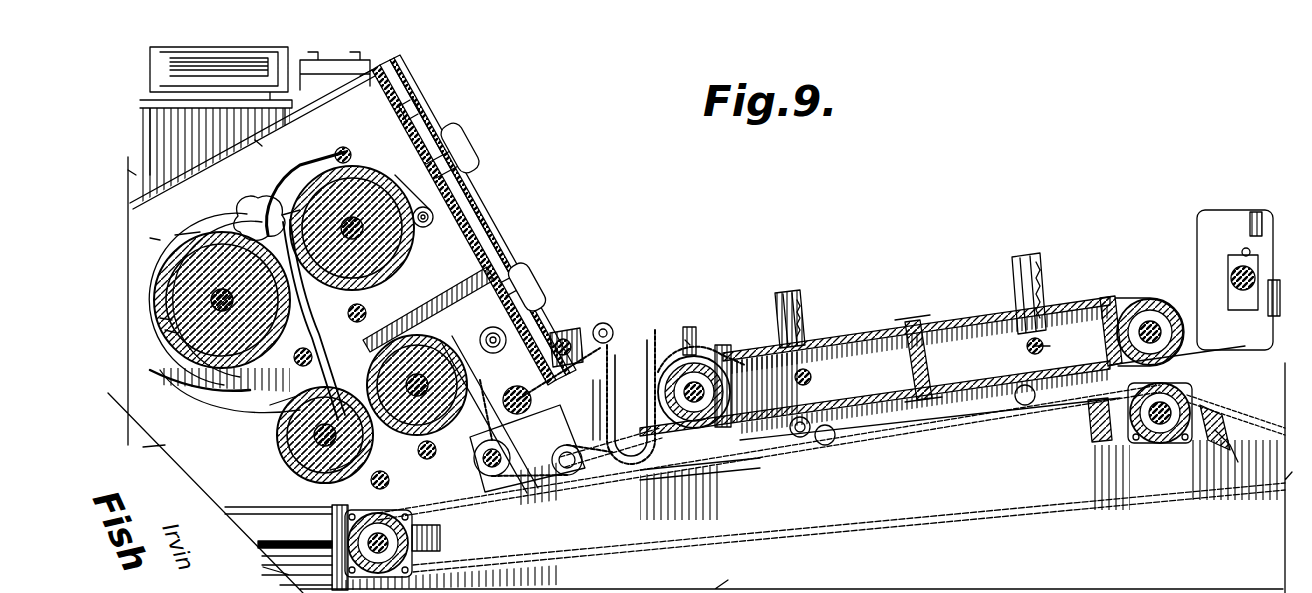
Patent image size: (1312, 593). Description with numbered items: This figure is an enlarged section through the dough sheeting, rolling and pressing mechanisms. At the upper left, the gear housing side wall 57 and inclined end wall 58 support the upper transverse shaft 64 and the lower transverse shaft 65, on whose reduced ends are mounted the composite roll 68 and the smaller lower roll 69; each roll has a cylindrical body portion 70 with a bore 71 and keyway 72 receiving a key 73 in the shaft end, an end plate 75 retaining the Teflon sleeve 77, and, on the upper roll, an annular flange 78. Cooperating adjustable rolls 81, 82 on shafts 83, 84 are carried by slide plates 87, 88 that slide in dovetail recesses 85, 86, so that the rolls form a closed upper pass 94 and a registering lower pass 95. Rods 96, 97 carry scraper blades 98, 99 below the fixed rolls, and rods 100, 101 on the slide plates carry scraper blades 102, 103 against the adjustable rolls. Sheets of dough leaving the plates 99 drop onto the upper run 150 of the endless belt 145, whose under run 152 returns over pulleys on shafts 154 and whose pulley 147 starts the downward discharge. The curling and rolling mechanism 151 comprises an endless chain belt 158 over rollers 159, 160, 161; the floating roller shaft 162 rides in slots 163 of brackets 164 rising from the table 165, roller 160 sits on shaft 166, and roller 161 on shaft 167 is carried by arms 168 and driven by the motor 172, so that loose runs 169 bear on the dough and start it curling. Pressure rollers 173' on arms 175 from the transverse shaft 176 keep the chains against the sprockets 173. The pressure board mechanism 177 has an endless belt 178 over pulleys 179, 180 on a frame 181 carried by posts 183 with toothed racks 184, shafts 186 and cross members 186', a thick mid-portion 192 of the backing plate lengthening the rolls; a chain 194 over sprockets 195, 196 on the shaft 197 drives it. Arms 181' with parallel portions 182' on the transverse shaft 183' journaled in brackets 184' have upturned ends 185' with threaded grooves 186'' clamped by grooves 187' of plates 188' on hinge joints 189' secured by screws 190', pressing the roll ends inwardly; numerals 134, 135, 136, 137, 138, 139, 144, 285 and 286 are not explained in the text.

The side wall 57 is at (358, 72).
The inclined end wall 58 is at (380, 100).
The upper transverse shaft 64 is at (215, 303).
The lower transverse shaft 65 is at (278, 437).
The composite roll 68 is at (151, 238).
The lower roll 69 is at (275, 455).
The cylindrical body portion 70 is at (160, 278).
The bore 71 is at (205, 225).
The keyway 72 is at (160, 320).
The key 73 is at (165, 332).
The end plate 75 is at (178, 232).
The sleeve 77 is at (148, 255).
The annular flange 78 is at (129, 172).
The adjustable roll 81 is at (292, 170).
The adjustable roll 82 is at (418, 330).
The shaft 83 is at (326, 190).
The shaft 84 is at (482, 337).
The dovetail recess 85 is at (428, 152).
The dovetail recess 86 is at (490, 270).
The slide plate 87 is at (362, 165).
The slide plate 88 is at (428, 309).
The pass 94 is at (232, 222).
The pass 95 is at (310, 505).
The rod 96 is at (275, 405).
The rod 97 is at (300, 505).
The scraper blade 98 is at (230, 393).
The scraper blade 99 is at (300, 515).
The rod 100 is at (410, 305).
The rod 101 is at (415, 548).
The scraper blade 102 is at (262, 420).
The scraper blade 103 is at (320, 515).
The adjusting screw 134 is at (510, 196).
The nut 135 is at (495, 240).
The bracket 136 is at (485, 230).
The screw 137 is at (500, 208).
The washer 138 is at (480, 188).
The bolt 139 is at (475, 176).
The hand knob 144 is at (470, 140).
The endless belt 145 is at (775, 538).
The pulley 147 is at (1195, 392).
The upper run 150 is at (765, 465).
The curling and rolling mechanism 151 is at (658, 370).
The under run 152 is at (990, 505).
The shaft 154 is at (1241, 455).
The endless chain belt 158 is at (585, 480).
The roller 159 is at (555, 440).
The roller 160 is at (530, 280).
The roller 161 is at (633, 345).
The shaft 162 is at (540, 530).
The slot 163 is at (478, 505).
The bracket 164 is at (478, 540).
The table 165 is at (735, 480).
The shaft 166 is at (560, 328).
The shaft 167 is at (690, 345).
The arm 168 is at (665, 305).
The loose run 169 is at (612, 505).
The motor 172 is at (684, 338).
The sprocket 173 is at (630, 397).
The pressure roller 173' is at (617, 303).
The arm 175 is at (605, 320).
The transverse shaft 176 is at (565, 335).
The pressure board mechanism 177 is at (908, 320).
The endless belt 178 is at (945, 318).
The pulley 179 is at (898, 412).
The pulley 180 is at (1110, 338).
The frame 181 is at (1100, 312).
The arm 181' is at (1008, 435).
The parallel portion 182' is at (1028, 456).
The post 183 is at (1099, 255).
The transverse shaft 183' is at (1208, 282).
The toothed rack 184 is at (1101, 276).
The bracket 184' is at (1208, 260).
The upturned end 185' is at (1193, 248).
The transverse shaft 186 is at (912, 323).
The cross member 186' is at (926, 248).
The threaded groove 186'' is at (1211, 209).
The groove 187' is at (1169, 291).
The plate 188' is at (1194, 231).
The hinge joint 189' is at (1241, 222).
The screw 190' is at (1240, 298).
The thick mid-portion 192 is at (790, 443).
The chain 194 is at (695, 458).
The sprocket 195 is at (625, 345).
The sprocket 196 is at (712, 338).
The shaft 197 is at (700, 348).
The frame plate 285 is at (262, 135).
The motor 286 is at (170, 72).